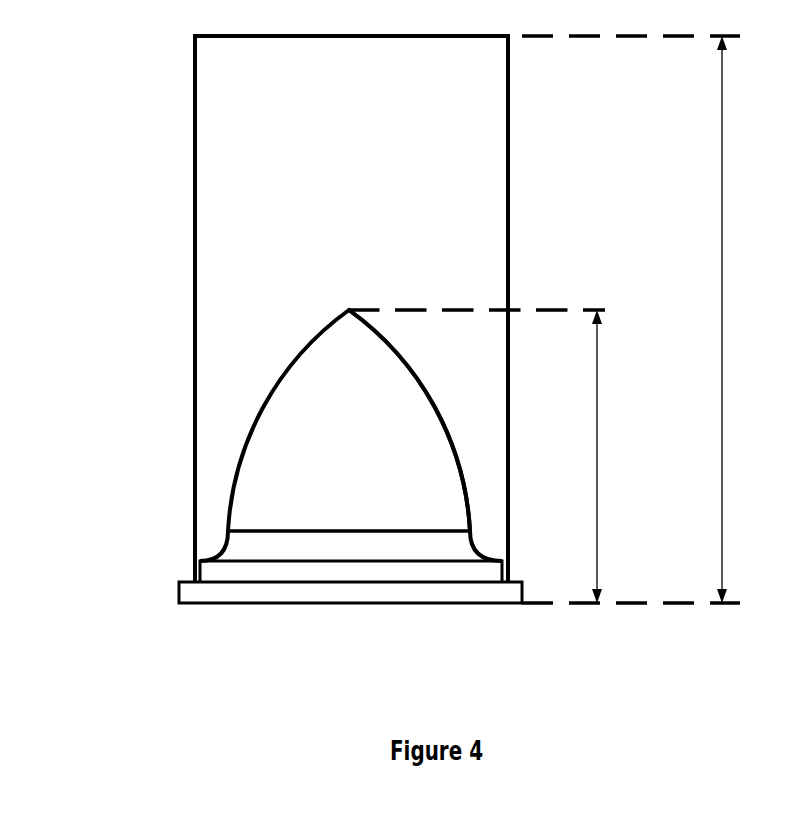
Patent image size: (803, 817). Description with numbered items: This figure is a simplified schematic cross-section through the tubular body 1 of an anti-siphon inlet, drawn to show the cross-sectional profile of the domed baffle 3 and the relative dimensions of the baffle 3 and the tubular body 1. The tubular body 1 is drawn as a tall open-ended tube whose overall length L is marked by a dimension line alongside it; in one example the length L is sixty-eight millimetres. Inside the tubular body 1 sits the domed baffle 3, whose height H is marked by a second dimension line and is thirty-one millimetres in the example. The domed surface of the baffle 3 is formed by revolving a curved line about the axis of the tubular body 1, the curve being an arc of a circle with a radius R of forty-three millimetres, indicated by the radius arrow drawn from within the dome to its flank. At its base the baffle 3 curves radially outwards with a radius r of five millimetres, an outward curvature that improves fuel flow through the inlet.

The tubular body 1 is at (195, 227).
The domed baffle 3 is at (297, 415).
The radius of base curvature r is at (220, 550).
The radius of arc R is at (425, 392).
The height of domed baffle H is at (609, 456).
The length of tubular body L is at (734, 319).